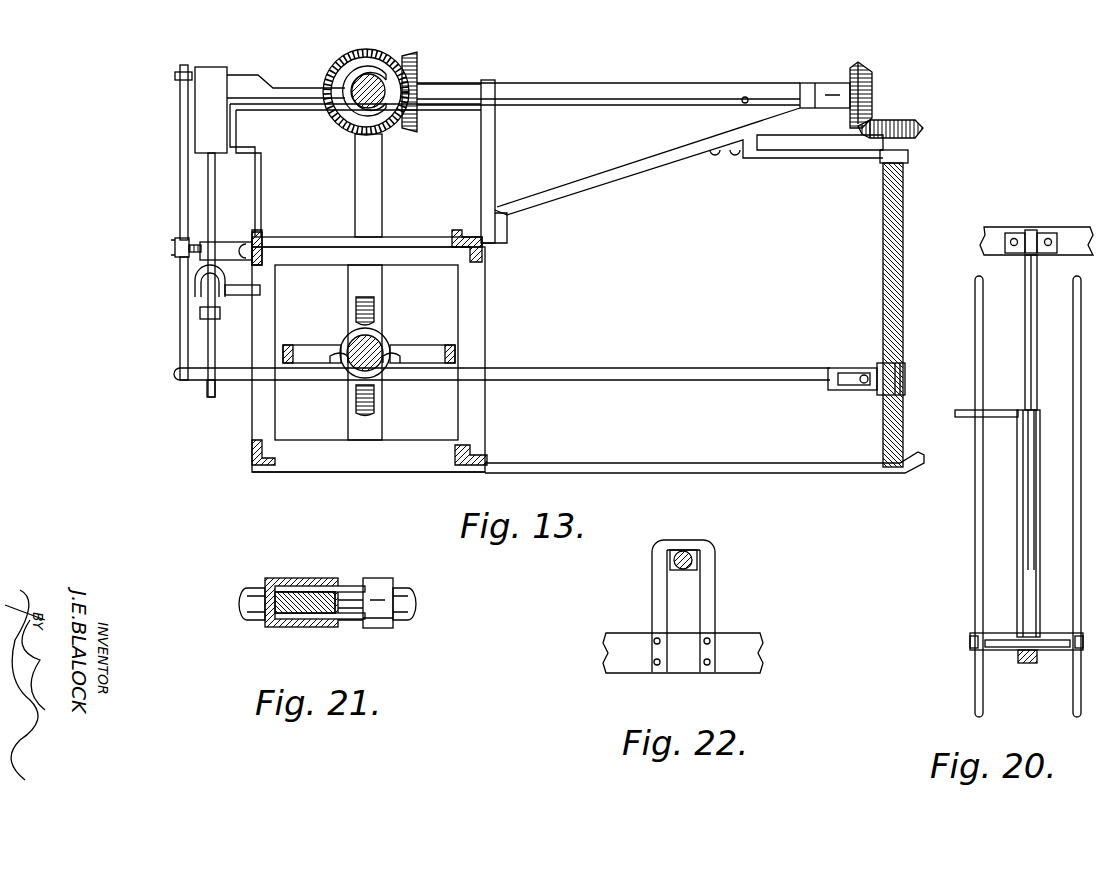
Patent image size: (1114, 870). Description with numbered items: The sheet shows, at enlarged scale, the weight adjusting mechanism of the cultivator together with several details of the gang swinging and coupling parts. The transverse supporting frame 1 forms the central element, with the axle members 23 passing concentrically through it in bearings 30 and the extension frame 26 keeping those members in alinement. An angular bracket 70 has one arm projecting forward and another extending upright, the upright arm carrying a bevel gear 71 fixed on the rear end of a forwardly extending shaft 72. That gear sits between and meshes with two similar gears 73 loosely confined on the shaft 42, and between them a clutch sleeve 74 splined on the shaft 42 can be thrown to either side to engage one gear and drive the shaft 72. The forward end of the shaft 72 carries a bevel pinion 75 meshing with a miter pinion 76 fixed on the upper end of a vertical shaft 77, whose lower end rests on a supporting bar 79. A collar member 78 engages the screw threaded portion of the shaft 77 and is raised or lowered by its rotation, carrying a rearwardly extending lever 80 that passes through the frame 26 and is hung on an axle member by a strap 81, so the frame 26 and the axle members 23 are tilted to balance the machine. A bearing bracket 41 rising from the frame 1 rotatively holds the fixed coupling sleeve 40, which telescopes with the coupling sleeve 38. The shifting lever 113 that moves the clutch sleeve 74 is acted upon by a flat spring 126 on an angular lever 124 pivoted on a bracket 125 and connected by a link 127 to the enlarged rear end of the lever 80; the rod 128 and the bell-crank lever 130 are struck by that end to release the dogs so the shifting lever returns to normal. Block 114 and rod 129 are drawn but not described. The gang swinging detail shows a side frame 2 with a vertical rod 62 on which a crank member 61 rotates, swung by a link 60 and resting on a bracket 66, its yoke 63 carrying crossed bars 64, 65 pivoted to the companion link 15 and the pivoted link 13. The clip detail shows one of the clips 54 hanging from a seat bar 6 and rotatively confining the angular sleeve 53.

In FIG. 13, the transverse supporting frame 1 is at (312, 255).
In FIG. 13, the shifting lever 113 is at (245, 75).
In FIG. 13, the bevel gears 73 is at (370, 50).
In FIG. 13, the clutch sleeve 74 is at (352, 70).
In FIG. 13, the shaft 42 is at (385, 88).
In FIG. 21, the shaft 42 is at (250, 612).
In FIG. 13, the bevel gear 71 is at (412, 62).
In FIG. 13, the forwardly extending shaft 72 is at (585, 86).
In FIG. 13, the bevel pinion 75 is at (872, 86).
In FIG. 13, the miter pinion 76 is at (923, 127).
In FIG. 13, the angular bracket 70 is at (600, 185).
In FIG. 13, the vertical shaft 77 is at (880, 226).
In FIG. 13, the supporting bar 79 is at (696, 463).
In FIG. 13, the block 114 is at (205, 116).
In FIG. 13, the flat spring 126 is at (180, 178).
In FIG. 13, the link 127 is at (180, 332).
In FIG. 13, the angular lever 124 is at (176, 250).
In FIG. 13, the rod 129 is at (215, 208).
In FIG. 13, the rod 128 is at (205, 398).
In FIG. 13, the bracket 125 is at (230, 252).
In FIG. 13, the bell-crank lever 130 is at (210, 350).
In FIG. 13, the bearing bracket 41 is at (382, 190).
In FIG. 13, the strap 81 is at (350, 340).
In FIG. 13, the axle members 23 is at (376, 345).
In FIG. 13, the extension frame 26 is at (455, 350).
In FIG. 13, the bearings 30 is at (384, 396).
In FIG. 13, the lever 80 is at (560, 368).
In FIG. 13, the collar member 78 is at (877, 368).
In FIG. 20, the side frames 2 is at (1067, 216).
In FIG. 20, the vertical rods 62 is at (1027, 334).
In FIG. 20, the companion link 15 is at (975, 583).
In FIG. 20, the pivoted links 13 is at (1081, 584).
In FIG. 20, the links 60 is at (965, 410).
In FIG. 20, the crank member 61 is at (1020, 505).
In FIG. 20, the crossed bar 64 is at (995, 636).
In FIG. 20, the yoke 63 is at (1005, 648).
In FIG. 20, the crossed bar 65 is at (1055, 648).
In FIG. 20, the bracket 66 is at (1028, 664).
In FIG. 21, the coupling sleeve 40 is at (300, 578).
In FIG. 21, the coupling sleeve 38 is at (380, 578).
In FIG. 22, the seat bars 6 is at (612, 636).
In FIG. 22, the clips 54 is at (705, 600).
In FIG. 22, the sleeve 53 is at (693, 562).